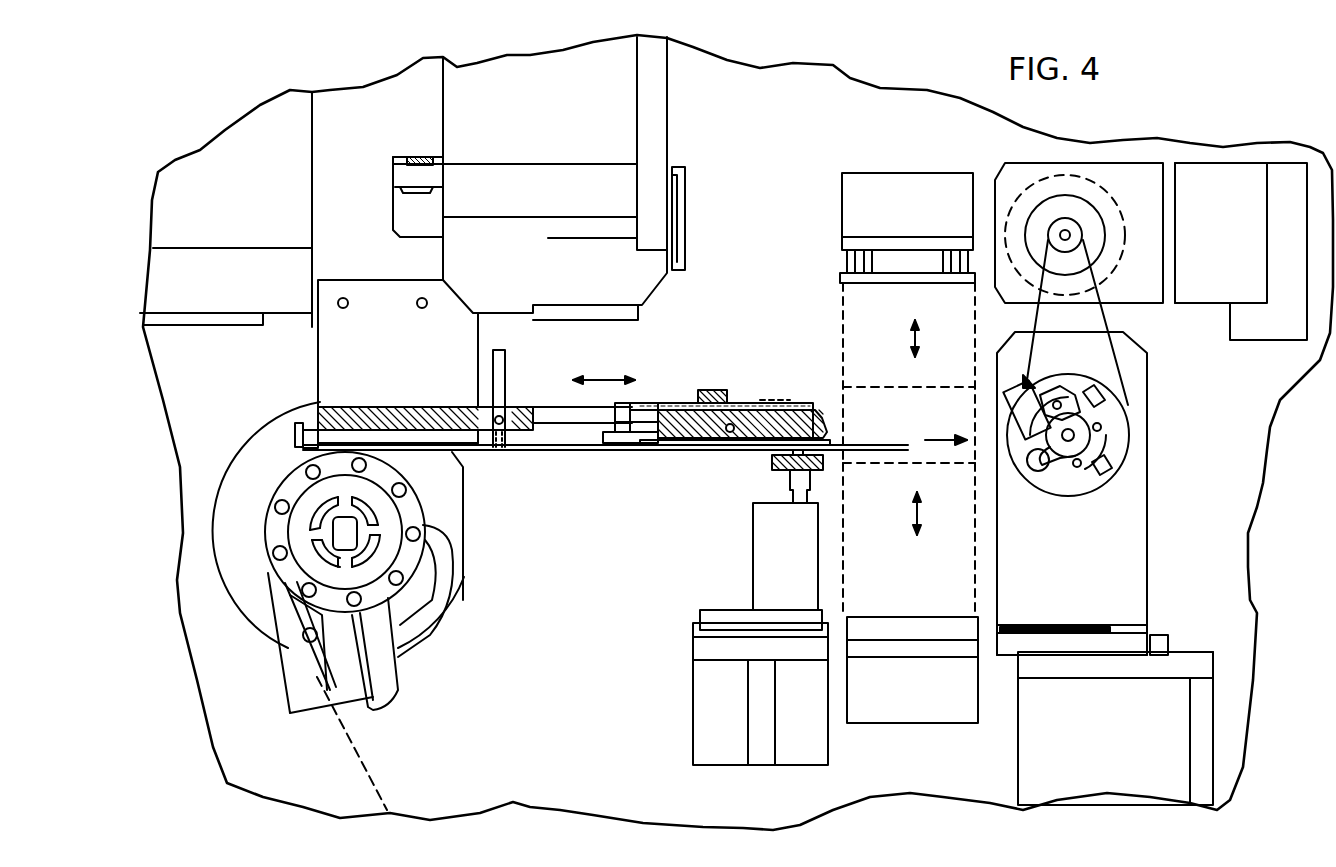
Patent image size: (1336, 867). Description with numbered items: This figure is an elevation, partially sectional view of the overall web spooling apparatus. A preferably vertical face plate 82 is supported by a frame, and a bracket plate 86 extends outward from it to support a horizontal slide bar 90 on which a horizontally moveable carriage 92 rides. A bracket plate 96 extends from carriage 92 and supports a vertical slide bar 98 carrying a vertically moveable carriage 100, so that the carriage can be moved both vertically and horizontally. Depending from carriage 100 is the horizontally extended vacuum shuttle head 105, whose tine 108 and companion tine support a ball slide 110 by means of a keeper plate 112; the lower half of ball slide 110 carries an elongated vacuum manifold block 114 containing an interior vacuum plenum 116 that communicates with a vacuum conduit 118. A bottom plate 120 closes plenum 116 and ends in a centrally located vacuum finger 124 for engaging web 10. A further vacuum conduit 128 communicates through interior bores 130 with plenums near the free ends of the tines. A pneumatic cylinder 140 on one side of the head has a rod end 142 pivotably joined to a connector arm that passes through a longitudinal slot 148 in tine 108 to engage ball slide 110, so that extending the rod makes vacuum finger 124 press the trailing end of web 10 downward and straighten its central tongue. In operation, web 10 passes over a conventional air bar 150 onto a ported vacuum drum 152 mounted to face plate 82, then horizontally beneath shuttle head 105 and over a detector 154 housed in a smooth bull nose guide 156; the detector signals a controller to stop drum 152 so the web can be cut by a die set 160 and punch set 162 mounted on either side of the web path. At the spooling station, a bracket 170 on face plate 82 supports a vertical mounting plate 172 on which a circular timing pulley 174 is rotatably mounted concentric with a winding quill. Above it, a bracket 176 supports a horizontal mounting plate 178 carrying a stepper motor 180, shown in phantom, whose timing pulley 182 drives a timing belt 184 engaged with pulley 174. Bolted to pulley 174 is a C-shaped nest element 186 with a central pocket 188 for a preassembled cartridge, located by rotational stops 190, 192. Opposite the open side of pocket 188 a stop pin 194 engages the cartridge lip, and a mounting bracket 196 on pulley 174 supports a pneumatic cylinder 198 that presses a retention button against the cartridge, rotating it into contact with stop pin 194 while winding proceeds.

The web 10 is at (357, 747).
The face plate 82 is at (877, 105).
The bracket plate 86 is at (660, 148).
The slide bar 90 is at (573, 207).
The carriage 92 is at (260, 237).
The bracket plate 96 is at (435, 177).
The vertical slide bar 98 is at (417, 158).
The carriage 100 is at (350, 110).
The vacuum shuttle head 105 is at (478, 343).
The tine 108 is at (795, 407).
The ball slide 110 is at (645, 410).
The keeper plate 112 is at (727, 400).
The vacuum manifold block 114 is at (805, 423).
The vacuum plenum 116 is at (755, 440).
The vacuum conduit 118 is at (585, 455).
The bottom plate 120 is at (685, 452).
The vacuum finger 124 is at (877, 438).
The vacuum conduit 128 is at (507, 370).
The interior bores 130 is at (510, 452).
The pneumatic cylinder 140 is at (310, 427).
The rod end 142 is at (763, 398).
The longitudinal slot 148 is at (618, 407).
The air bar 150 is at (313, 652).
The vacuum drum 152 is at (273, 537).
The detector 154 is at (802, 562).
The bull nose guide 156 is at (778, 462).
The die set 160 is at (965, 568).
The punch set 162 is at (965, 340).
The bracket 170 is at (1090, 668).
The mounting plate 172 is at (1147, 600).
The timing pulley 174 is at (1122, 435).
The bracket 176 is at (1210, 290).
The mounting plate 178 is at (1005, 175).
The stepper motor 180 is at (1108, 197).
The timing pulley 182 is at (1077, 228).
The timing belt 184 is at (1100, 293).
The nest element 186 is at (1105, 407).
The pocket 188 is at (1110, 443).
The rotational stop 190 is at (1085, 388).
The rotational stop 192 is at (1097, 487).
The stop pin 194 is at (1040, 470).
The mounting bracket 196 is at (1023, 433).
The pneumatic cylinder 198 is at (1042, 377).